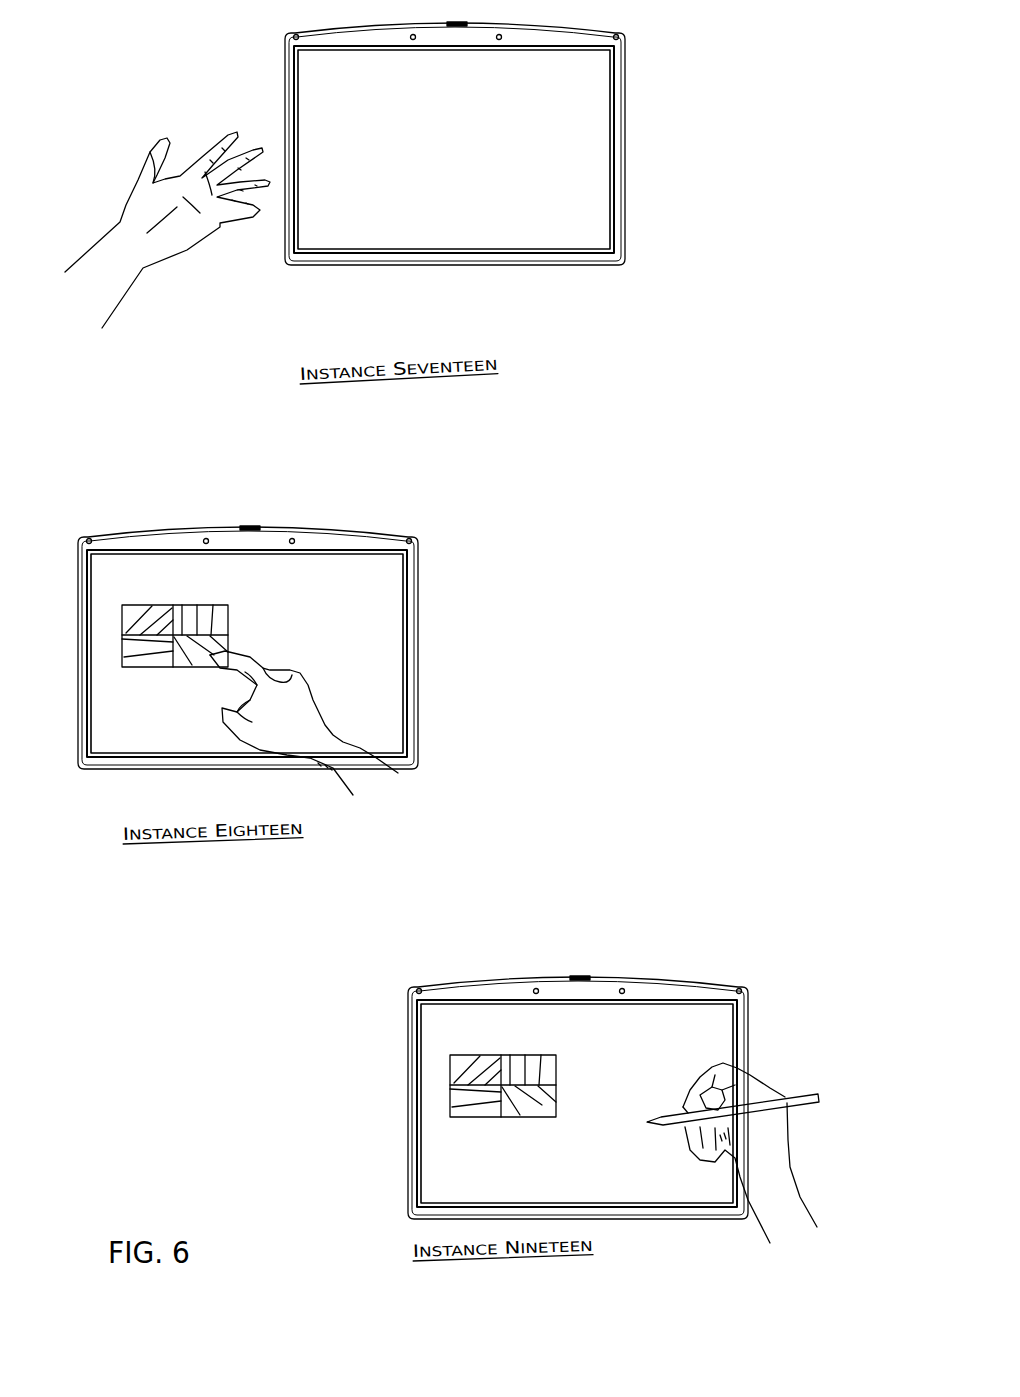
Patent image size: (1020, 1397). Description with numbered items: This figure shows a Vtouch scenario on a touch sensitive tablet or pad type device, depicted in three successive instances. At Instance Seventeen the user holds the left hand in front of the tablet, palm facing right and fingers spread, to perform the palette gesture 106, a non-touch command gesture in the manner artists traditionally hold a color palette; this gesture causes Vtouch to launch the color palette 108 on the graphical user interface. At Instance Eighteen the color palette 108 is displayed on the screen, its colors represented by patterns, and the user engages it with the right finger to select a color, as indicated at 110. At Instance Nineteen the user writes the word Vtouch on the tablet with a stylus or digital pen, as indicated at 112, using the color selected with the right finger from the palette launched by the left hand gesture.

The palette gesture 106 is at (220, 265).
The color palette 108 is at (229, 621).
The color selection 110 is at (233, 668).
The writing 112 is at (657, 1136).